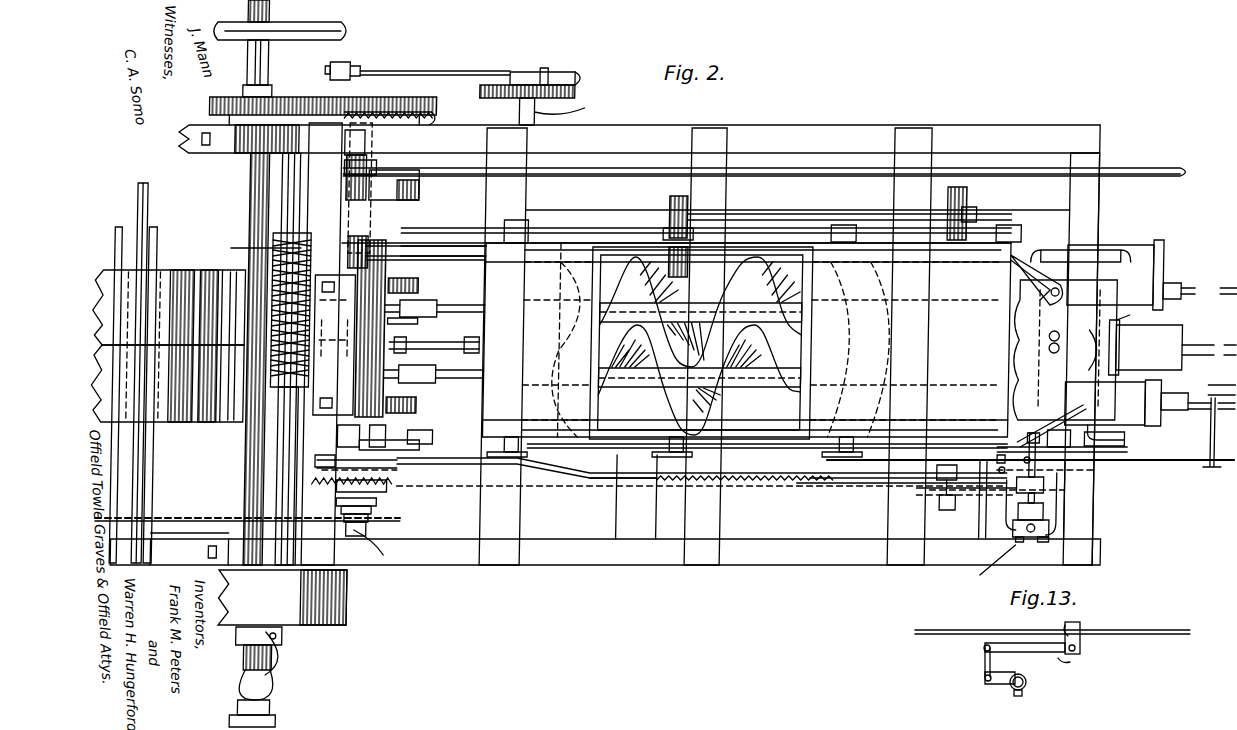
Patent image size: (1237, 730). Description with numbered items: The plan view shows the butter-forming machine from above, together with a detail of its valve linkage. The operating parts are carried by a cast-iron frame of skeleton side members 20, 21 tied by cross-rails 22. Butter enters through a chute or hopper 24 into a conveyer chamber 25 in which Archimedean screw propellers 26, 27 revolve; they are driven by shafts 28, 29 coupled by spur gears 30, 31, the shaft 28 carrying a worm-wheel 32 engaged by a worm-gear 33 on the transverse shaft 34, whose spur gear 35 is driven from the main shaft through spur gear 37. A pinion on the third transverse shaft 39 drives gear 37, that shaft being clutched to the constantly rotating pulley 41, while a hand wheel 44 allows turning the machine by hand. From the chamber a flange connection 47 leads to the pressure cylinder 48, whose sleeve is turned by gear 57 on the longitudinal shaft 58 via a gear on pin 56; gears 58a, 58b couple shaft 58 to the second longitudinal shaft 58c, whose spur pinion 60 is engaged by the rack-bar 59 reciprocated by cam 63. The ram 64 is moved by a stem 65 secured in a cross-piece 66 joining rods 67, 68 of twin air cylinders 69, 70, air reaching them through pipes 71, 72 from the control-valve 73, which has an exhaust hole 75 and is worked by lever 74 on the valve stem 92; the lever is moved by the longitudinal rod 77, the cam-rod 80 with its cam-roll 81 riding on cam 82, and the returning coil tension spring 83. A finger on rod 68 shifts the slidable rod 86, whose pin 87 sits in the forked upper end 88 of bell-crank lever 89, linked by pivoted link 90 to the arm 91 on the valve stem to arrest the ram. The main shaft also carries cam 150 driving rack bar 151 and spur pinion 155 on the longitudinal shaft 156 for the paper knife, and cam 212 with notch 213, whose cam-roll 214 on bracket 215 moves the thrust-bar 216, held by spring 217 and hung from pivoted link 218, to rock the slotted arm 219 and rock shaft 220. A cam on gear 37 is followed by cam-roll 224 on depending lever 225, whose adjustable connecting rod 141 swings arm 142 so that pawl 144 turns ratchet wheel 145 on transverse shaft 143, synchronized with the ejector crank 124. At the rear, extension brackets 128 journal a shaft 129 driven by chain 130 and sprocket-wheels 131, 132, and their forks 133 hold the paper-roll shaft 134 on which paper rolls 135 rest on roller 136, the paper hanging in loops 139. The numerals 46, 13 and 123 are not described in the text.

In FIG. 2, the skeleton side member 20 is at (640, 128).
In FIG. 2, the skeleton side member 21 is at (740, 560).
In FIG. 2, the cross-rail 22 is at (308, 141).
In FIG. 2, the chute or hopper 24 is at (780, 448).
In FIG. 2, the conveyer chamber 25 is at (860, 455).
In FIG. 2, the Archimedean screw propeller 26 is at (730, 286).
In FIG. 2, the Archimedean screw propeller 27 is at (678, 400).
In FIG. 2, the shaft 28 is at (452, 302).
In FIG. 2, the shaft 29 is at (455, 380).
In FIG. 2, the spur gear 30 is at (412, 256).
In FIG. 2, the spur gear 31 is at (375, 452).
In FIG. 2, the worm-wheel 32 is at (257, 249).
In FIG. 2, the worm-gear 33 is at (272, 315).
In FIG. 2, the transverse shaft 34 is at (280, 463).
In FIG. 2, the spur gear 35 is at (274, 97).
In FIG. 2, the spur gear 37 is at (423, 130).
In FIG. 2, the third transverse shaft 39 is at (248, 178).
In FIG. 2, the pulley 41 is at (345, 590).
In FIG. 2, the hand wheel 44 is at (301, 24).
In FIG. 2, the lever 46 is at (1030, 268).
In FIG. 2, the flange connection 47 is at (1065, 350).
In FIG. 2, the pressure cylinder 48 is at (1128, 330).
In FIG. 2, the pin 56 is at (348, 436).
In FIG. 2, the gear 57 is at (968, 200).
In FIG. 2, the longitudinal shaft 58 is at (770, 212).
In FIG. 2, the gear 58a is at (668, 200).
In FIG. 2, the gear 58b is at (684, 280).
In FIG. 2, the second longitudinal shaft 58c is at (468, 243).
In FIG. 2, the rack-bar 59 is at (372, 250).
In FIG. 2, the spur pinion 60 is at (372, 240).
In FIG. 2, the cam 63 is at (416, 284).
In FIG. 2, the ram or plunger 64 is at (1175, 328).
In FIG. 2, the stem 65 is at (1205, 345).
In FIG. 2, the cross-piece 66 is at (1221, 382).
In FIG. 2, the rod 67 is at (1195, 288).
In FIG. 2, the rod 68 is at (1209, 432).
In FIG. 2, the air cylinder 69 is at (1150, 268).
In FIG. 2, the air cylinder 70 is at (1060, 428).
In FIG. 2, the pipe 71 is at (1005, 520).
In FIG. 2, the pipe 72 is at (1068, 510).
In FIG. 2, the control-valve 73 is at (1060, 531).
In FIG. 2, the arm or lever 74 is at (1048, 485).
In FIG. 2, the vent or exhaust hole 75 is at (990, 567).
In FIG. 2, the longitudinal rod 77 is at (593, 482).
In FIG. 2, the cam-rod 80 is at (375, 512).
In FIG. 2, the cam-roll 81 is at (364, 494).
In FIG. 2, the cam 82 is at (378, 508).
In FIG. 2, the coil tension spring 83 is at (380, 502).
In FIG. 2, the rod 86 is at (1185, 462).
In FIG. 13, the rod 86 is at (1148, 628).
In FIG. 2, the pin 87 is at (1062, 445).
In FIG. 13, the pin 87 is at (1075, 624).
In FIG. 13, the forked upper end 88 is at (1082, 642).
In FIG. 2, the bell-crank lever 89 is at (1085, 430).
In FIG. 13, the bell-crank lever 89 is at (1072, 666).
In FIG. 13, the pivoted link 90 is at (985, 660).
In FIG. 2, the arm 91 is at (996, 475).
In FIG. 13, the arm 91 is at (998, 685).
In FIG. 2, the valve stem 92 is at (1026, 468).
In FIG. 13, the valve stem 92 is at (1028, 682).
In FIG. 2, the pin 13 is at (1025, 473).
In FIG. 2, the rod 123 is at (440, 345).
In FIG. 2, the ejector crank 124 is at (334, 345).
In FIG. 2, the extension bracket 128 is at (202, 155).
In FIG. 2, the shaft 129 is at (148, 215).
In FIG. 2, the chain 130 is at (200, 530).
In FIG. 2, the sprocket-wheel 131 is at (165, 518).
In FIG. 2, the sprocket-wheel 132 is at (390, 550).
In FIG. 2, the fork 133 is at (152, 554).
In FIG. 2, the paper-roll shaft 134 is at (118, 227).
In FIG. 2, the paper roll 135 is at (185, 263).
In FIG. 2, the roller 136 is at (158, 248).
In FIG. 2, the loop 139 is at (220, 270).
In FIG. 2, the adjustable connecting rod 141 is at (476, 75).
In FIG. 2, the arm 142 is at (516, 78).
In FIG. 2, the transverse shaft 143 is at (567, 108).
In FIG. 2, the pawl 144 is at (516, 108).
In FIG. 2, the ratchet wheel 145 is at (574, 74).
In FIG. 2, the cam 150 is at (411, 186).
In FIG. 2, the rack bar 151 is at (364, 192).
In FIG. 2, the spur pinion 155 is at (355, 150).
In FIG. 2, the longitudinal shaft 156 is at (575, 178).
In FIG. 2, the cam 212 is at (318, 477).
In FIG. 2, the notch 213 is at (1061, 466).
In FIG. 2, the cam-roll 214 is at (410, 468).
In FIG. 2, the bracket 215 is at (415, 450).
In FIG. 2, the thrust-bar 216 is at (832, 485).
In FIG. 2, the spring 217 is at (748, 484).
In FIG. 2, the pivoted link 218 is at (348, 462).
In FIG. 2, the slotted arm 219 is at (960, 482).
In FIG. 2, the rock shaft 220 is at (349, 172).
In FIG. 2, the cam-roll 224 is at (351, 118).
In FIG. 2, the depending lever 225 is at (341, 68).